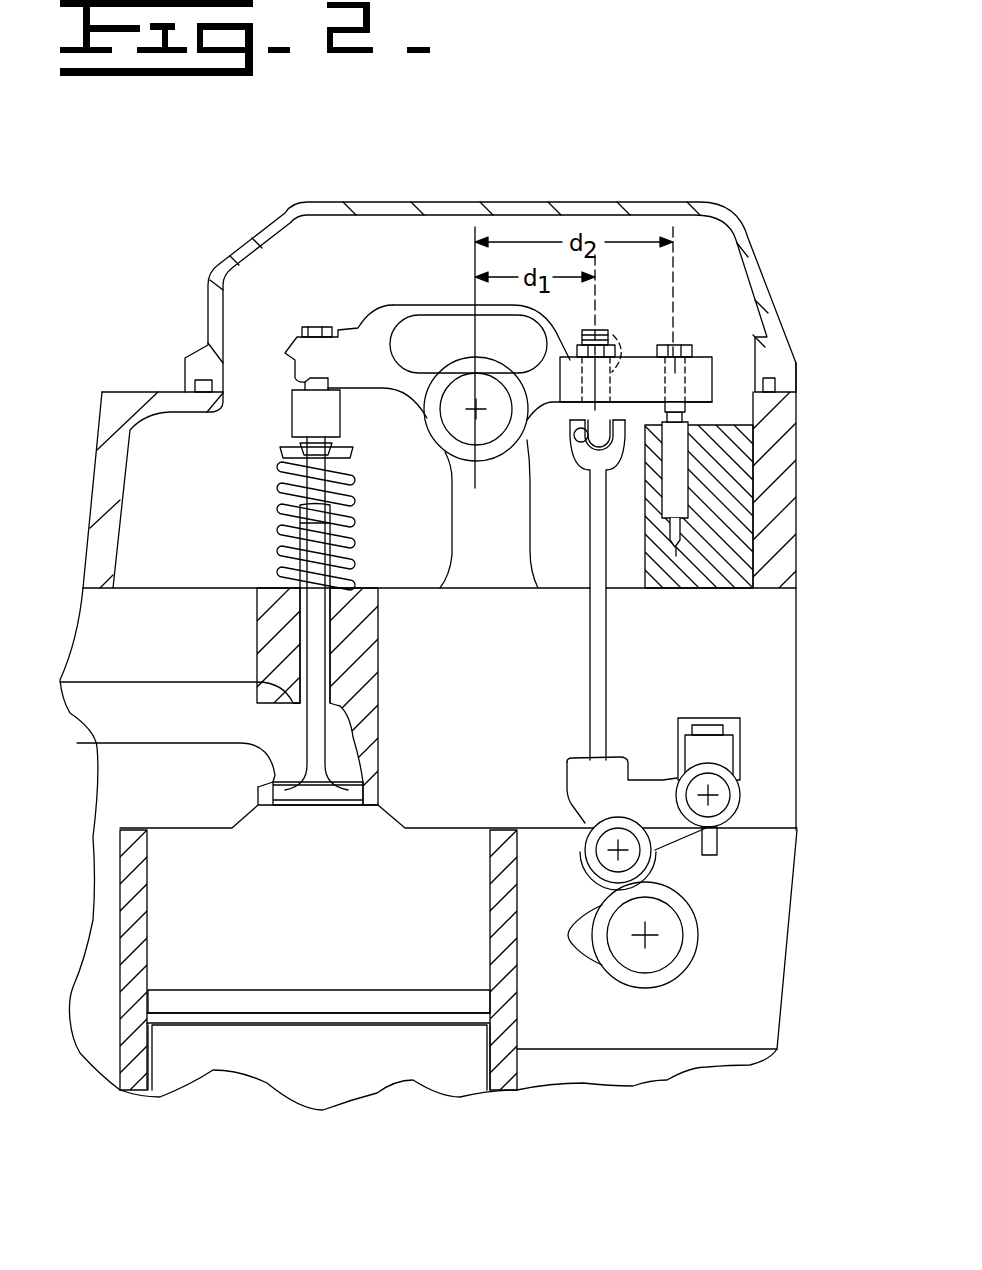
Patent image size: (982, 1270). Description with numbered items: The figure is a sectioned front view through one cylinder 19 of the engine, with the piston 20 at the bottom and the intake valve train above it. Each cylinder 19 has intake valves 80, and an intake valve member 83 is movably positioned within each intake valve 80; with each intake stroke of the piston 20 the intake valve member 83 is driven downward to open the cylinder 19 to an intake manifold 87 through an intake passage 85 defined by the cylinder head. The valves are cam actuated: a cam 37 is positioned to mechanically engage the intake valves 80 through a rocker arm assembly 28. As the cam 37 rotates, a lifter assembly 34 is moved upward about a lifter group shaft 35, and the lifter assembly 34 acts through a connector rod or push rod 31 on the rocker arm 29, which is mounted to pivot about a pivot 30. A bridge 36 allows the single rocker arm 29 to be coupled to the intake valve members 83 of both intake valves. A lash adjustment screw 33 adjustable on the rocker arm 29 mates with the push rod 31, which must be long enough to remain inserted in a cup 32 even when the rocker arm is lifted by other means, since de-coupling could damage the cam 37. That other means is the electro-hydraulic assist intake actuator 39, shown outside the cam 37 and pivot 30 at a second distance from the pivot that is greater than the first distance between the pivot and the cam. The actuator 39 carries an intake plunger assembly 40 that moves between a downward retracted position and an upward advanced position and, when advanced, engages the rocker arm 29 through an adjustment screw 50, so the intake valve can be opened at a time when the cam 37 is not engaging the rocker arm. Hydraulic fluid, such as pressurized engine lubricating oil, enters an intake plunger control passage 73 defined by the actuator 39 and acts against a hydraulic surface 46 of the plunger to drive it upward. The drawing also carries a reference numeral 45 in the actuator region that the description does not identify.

The cylinder 19 is at (120, 888).
The piston 20 is at (267, 990).
The rocker arm assembly 28 is at (600, 318).
The rocker arm 29 is at (436, 304).
The pivot 30 is at (473, 405).
The connector rod 31 is at (588, 523).
The cup 32 is at (575, 444).
The lash adjustment screw 33 is at (637, 347).
The lifter assembly 34 is at (663, 848).
The lifter group shaft 35 is at (733, 815).
The bridge 36 is at (292, 425).
The cam 37 is at (683, 967).
The electro-hydraulic assist intake actuator 39 is at (712, 588).
The intake plunger assembly 40 is at (690, 495).
The stud 45 is at (677, 403).
The hydraulic surface 46 is at (672, 532).
The adjustment screw 50 is at (690, 404).
The intake plunger control passage 73 is at (676, 548).
The intake valve 80 is at (256, 633).
The intake valve member 83 is at (328, 668).
The intake passage 85 is at (348, 768).
The intake manifold 87 is at (132, 698).